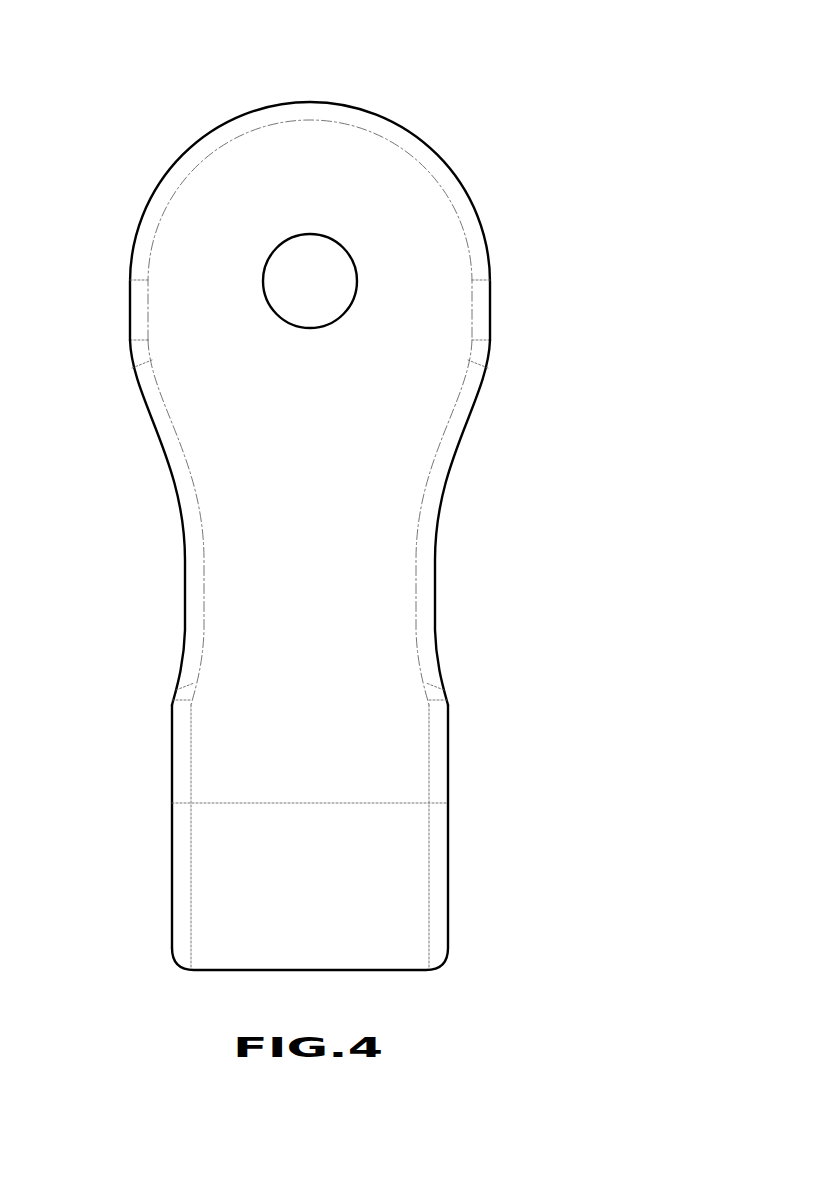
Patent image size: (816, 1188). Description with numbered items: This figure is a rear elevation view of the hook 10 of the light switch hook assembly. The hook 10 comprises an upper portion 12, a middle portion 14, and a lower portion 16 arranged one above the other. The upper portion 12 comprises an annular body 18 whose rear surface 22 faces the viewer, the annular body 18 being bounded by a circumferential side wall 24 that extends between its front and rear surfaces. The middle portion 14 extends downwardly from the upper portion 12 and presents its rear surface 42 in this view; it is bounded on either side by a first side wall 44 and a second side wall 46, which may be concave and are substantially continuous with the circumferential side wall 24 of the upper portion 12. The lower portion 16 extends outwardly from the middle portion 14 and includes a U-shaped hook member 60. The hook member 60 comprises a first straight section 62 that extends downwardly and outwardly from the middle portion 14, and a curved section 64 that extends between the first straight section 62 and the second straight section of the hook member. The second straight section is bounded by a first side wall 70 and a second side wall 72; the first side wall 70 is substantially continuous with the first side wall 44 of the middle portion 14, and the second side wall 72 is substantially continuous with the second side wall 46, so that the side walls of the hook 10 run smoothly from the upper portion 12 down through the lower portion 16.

The hook 10 is at (369, 509).
The upper portion 12 is at (344, 194).
The middle portion 14 is at (340, 522).
The lower portion 16 is at (339, 837).
The annular body 18 is at (354, 90).
The rear surface 22 is at (203, 240).
The circumferential side wall 24 is at (220, 122).
The rear surface 42 is at (247, 598).
The first side wall 44 is at (437, 618).
The second side wall 46 is at (183, 622).
The hook member 60 is at (375, 837).
The first straight section 62 is at (382, 783).
The curved section 64 is at (408, 909).
The first side wall 70 is at (448, 803).
The second side wall 72 is at (172, 803).